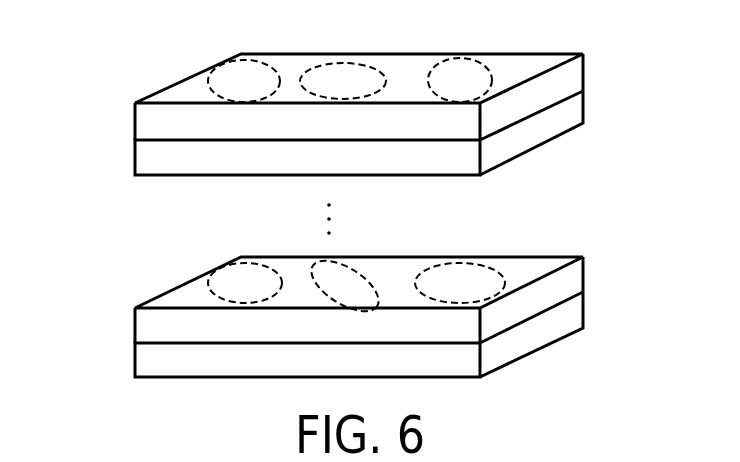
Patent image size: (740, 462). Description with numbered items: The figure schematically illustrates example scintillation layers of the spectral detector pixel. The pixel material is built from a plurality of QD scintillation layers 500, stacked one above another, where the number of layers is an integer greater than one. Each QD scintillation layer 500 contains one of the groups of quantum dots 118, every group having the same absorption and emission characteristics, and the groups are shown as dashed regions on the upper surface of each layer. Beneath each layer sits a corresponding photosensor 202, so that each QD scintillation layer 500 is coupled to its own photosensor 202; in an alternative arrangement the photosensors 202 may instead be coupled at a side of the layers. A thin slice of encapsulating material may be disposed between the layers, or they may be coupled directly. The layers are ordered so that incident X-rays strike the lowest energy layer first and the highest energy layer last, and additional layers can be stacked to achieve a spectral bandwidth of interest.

The QD scintillation layer 500 is at (135, 328).
The photosensor 202 is at (583, 108).
The group of quantum dots 118 is at (356, 189).